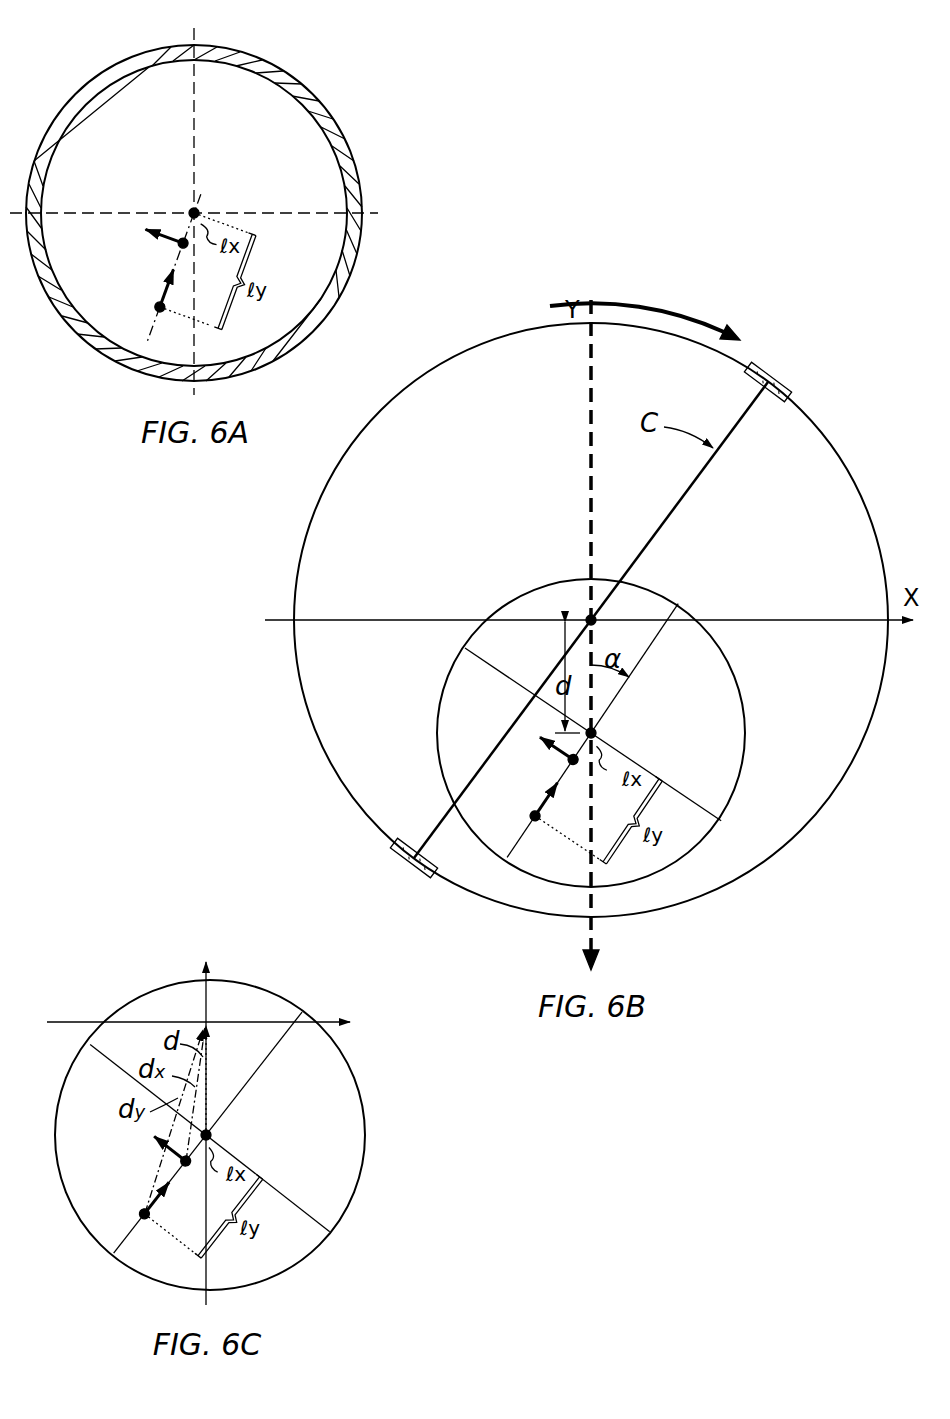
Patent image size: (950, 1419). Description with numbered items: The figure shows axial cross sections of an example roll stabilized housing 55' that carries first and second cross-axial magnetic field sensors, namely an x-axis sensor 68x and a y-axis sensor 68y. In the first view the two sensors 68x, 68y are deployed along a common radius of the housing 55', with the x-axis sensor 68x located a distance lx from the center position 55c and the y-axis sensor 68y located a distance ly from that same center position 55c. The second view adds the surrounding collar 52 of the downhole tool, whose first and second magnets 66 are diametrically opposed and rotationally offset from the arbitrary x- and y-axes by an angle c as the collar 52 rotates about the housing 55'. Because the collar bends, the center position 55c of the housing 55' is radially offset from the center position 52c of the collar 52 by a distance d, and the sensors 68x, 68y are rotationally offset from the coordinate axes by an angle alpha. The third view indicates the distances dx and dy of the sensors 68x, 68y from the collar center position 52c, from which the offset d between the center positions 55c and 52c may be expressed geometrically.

In FIG. 6B, the collar 52 is at (492, 341).
In FIG. 6B, the center position of the collar 52c is at (590, 615).
In FIG. 6A, the roll stabilized housing 55' is at (194, 210).
In FIG. 6C, the roll stabilized housing 55' is at (210, 1118).
In FIG. 6A, the center position of the housing 55c is at (197, 210).
In FIG. 6B, the center position of the housing 55c is at (600, 735).
In FIG. 6C, the center position of the housing 55c is at (214, 1136).
In FIG. 6B, the magnets 66 is at (783, 378).
In FIG. 6A, the x-axis magnetic field sensor 68x is at (178, 245).
In FIG. 6C, the x-axis magnetic field sensor 68x is at (180, 1162).
In FIG. 6A, the y-axis magnetic field sensor 68y is at (156, 307).
In FIG. 6C, the y-axis magnetic field sensor 68y is at (140, 1210).